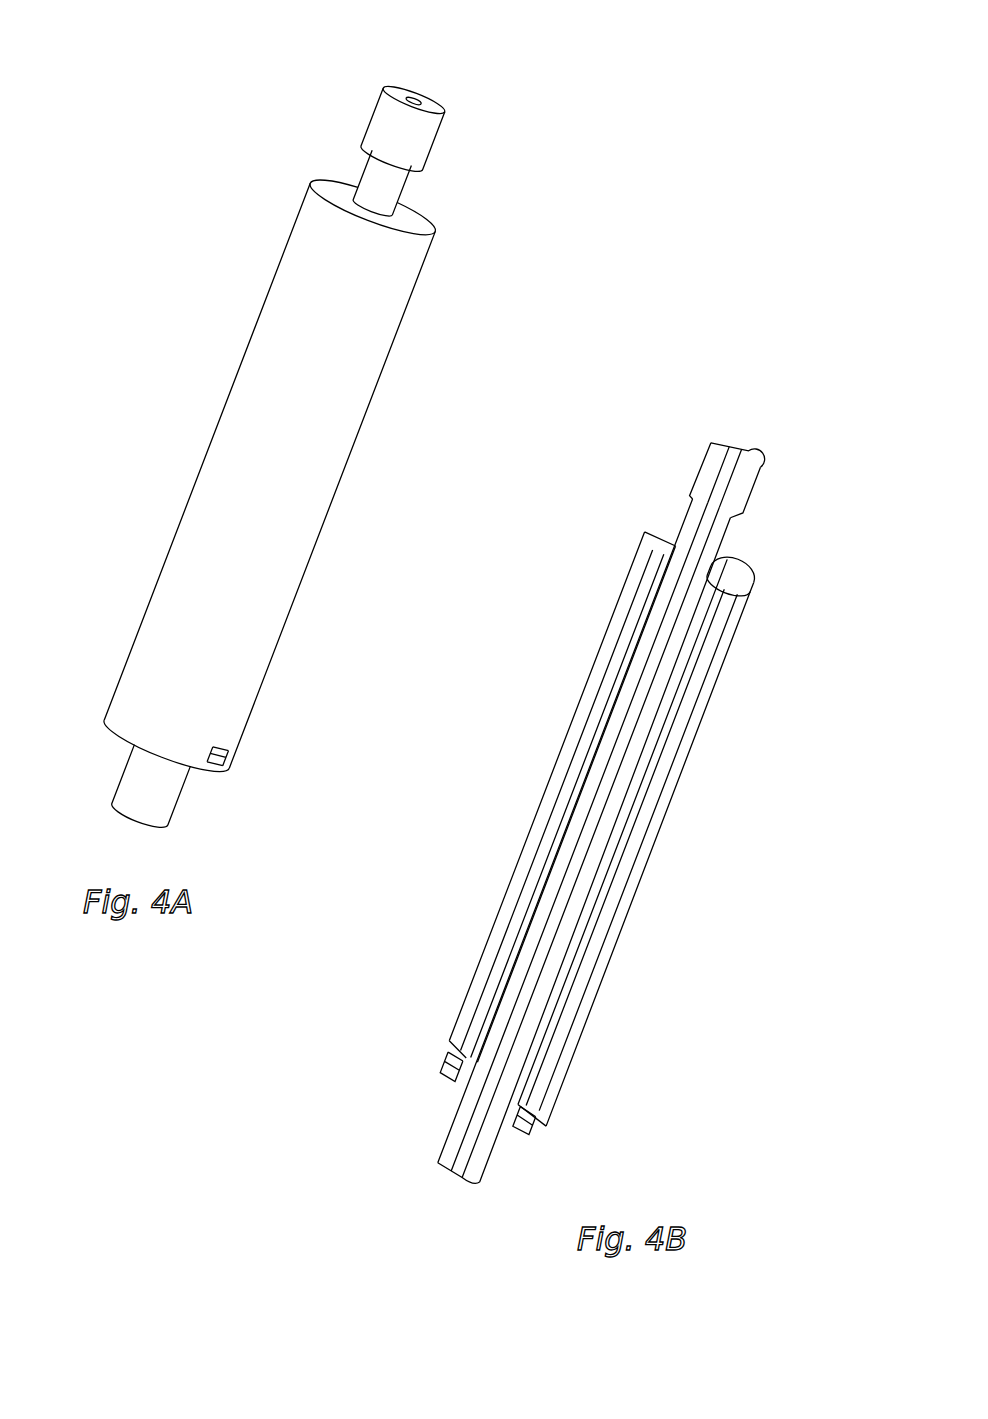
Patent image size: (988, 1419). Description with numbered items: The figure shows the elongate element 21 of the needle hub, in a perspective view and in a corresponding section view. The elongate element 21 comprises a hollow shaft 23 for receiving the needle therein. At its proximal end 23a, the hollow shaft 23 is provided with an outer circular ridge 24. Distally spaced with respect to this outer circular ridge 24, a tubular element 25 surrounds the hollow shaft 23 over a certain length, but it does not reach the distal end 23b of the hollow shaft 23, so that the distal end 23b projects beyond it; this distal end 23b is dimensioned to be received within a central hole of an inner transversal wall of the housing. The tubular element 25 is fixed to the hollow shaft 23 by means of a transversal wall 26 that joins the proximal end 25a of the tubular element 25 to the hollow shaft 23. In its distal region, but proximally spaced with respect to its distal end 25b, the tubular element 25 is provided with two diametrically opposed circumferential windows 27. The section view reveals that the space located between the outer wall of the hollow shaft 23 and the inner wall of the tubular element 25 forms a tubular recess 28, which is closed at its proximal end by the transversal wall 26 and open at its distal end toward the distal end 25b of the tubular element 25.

In FIG. 4A, the elongate element 21 is at (284, 453).
In FIG. 4B, the elongate element 21 is at (603, 813).
In FIG. 4A, the hollow shaft 23 is at (276, 453).
In FIG. 4B, the hollow shaft 23 is at (604, 813).
In FIG. 4A, the proximal end of the hollow shaft 23a is at (383, 74).
In FIG. 4B, the proximal end of the hollow shaft 23a is at (706, 423).
In FIG. 4A, the distal end of the hollow shaft 23b is at (127, 831).
In FIG. 4B, the distal end of the hollow shaft 23b is at (469, 1198).
In FIG. 4A, the outer circular ridge 24 is at (426, 135).
In FIG. 4B, the outer circular ridge 24 is at (738, 493).
In FIG. 4A, the tubular element 25 is at (310, 490).
In FIG. 4B, the tubular element 25 is at (673, 781).
In FIG. 4A, the proximal end of the tubular element 25a is at (420, 228).
In FIG. 4B, the proximal end of the tubular element 25a is at (742, 603).
In FIG. 4A, the distal end of the tubular element 25b is at (218, 763).
In FIG. 4B, the distal end of the tubular element 25b is at (545, 1125).
In FIG. 4B, the transversal wall 26 is at (730, 575).
In FIG. 4A, the circumferential windows 27 is at (240, 746).
In FIG. 4B, the circumferential windows 27 is at (553, 1105).
In FIG. 4B, the tubular recess 28 is at (564, 797).